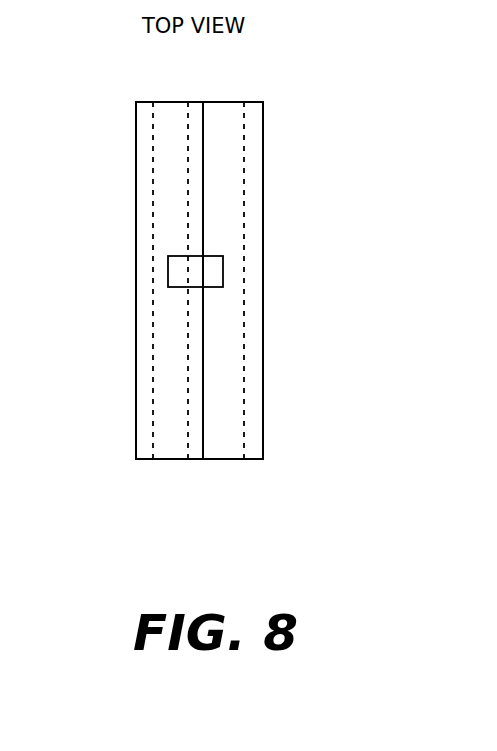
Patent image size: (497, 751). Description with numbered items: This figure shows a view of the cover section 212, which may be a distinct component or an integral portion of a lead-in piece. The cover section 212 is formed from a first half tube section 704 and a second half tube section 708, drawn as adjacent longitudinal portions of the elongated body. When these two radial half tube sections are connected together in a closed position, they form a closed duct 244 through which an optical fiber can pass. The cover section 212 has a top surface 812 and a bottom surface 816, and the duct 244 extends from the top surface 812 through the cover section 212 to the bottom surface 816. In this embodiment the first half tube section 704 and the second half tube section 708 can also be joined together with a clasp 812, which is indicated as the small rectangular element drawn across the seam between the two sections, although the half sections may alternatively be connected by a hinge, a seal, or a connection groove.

The cover section 212 is at (292, 350).
The duct 244 is at (220, 443).
The first half tube section 704 is at (248, 197).
The second half tube section 708 is at (136, 358).
The top surface 812 is at (172, 272).
The bottom surface 816 is at (252, 460).